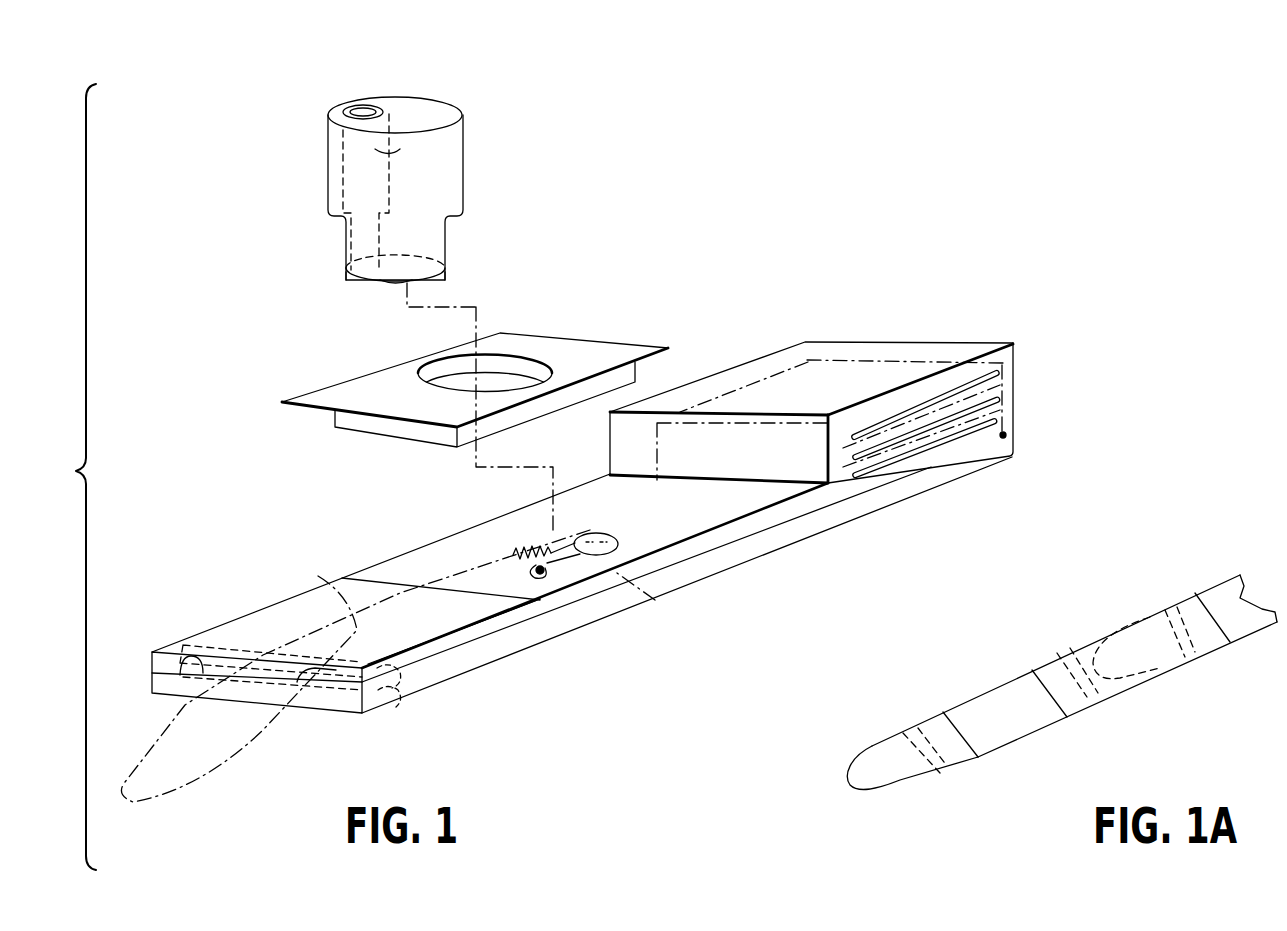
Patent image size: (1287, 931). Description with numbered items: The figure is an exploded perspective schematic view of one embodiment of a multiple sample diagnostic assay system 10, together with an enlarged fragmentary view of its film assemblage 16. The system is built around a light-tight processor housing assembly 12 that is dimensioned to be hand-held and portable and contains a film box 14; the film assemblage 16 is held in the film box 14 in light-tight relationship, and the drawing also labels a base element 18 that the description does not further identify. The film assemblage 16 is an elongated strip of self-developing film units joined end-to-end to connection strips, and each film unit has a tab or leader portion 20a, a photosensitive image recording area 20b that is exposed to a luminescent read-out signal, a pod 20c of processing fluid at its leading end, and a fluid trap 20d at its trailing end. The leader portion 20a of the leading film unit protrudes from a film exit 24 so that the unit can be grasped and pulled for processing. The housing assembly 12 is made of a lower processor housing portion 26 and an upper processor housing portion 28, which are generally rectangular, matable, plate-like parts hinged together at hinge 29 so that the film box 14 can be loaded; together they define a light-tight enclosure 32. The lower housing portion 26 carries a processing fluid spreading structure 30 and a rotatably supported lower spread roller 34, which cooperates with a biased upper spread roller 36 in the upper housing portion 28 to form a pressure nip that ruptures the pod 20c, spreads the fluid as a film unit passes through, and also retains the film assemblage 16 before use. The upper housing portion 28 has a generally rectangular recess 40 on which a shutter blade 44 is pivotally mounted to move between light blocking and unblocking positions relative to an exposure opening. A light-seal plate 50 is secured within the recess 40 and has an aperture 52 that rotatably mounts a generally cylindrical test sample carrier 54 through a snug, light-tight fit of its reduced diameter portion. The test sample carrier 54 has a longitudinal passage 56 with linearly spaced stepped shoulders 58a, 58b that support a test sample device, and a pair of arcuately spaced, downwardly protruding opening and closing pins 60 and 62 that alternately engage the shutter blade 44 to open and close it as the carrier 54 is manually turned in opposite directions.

In FIG. 1, the multiple sample diagnostic assay system 10 is at (893, 188).
In FIG. 1, the processor housing assembly 12 is at (899, 330).
In FIG. 1, the film box 14 is at (800, 388).
In FIG. 1, the film assemblage 16 is at (968, 405).
In FIG. 1A, the film assemblage 16 is at (985, 646).
In FIG. 1, the base 18 is at (307, 568).
In FIG. 1A, the tab or leader portion 20a is at (873, 760).
In FIG. 1A, the image recording area 20b is at (1027, 718).
In FIG. 1A, the pod 20c is at (942, 763).
In FIG. 1A, the fluid trap 20d is at (1060, 640).
In FIG. 1, the film exit 24 is at (333, 680).
In FIG. 1, the lower processor housing portion 26 is at (480, 658).
In FIG. 1, the upper processor housing portion 28 is at (538, 598).
In FIG. 1, the hinge 29 is at (1006, 436).
In FIG. 1, the processing fluid spreading structure 30 is at (231, 650).
In FIG. 1, the light-tight enclosure 32 is at (657, 602).
In FIG. 1, the lower spread roller 34 is at (400, 717).
In FIG. 1, the upper spread roller 36 is at (420, 697).
In FIG. 1, the recess 40 is at (483, 578).
In FIG. 1, the shutter blade 44 is at (576, 562).
In FIG. 1, the light-seal plate 50 is at (600, 340).
In FIG. 1, the aperture 52 is at (512, 362).
In FIG. 1, the test sample carrier 54 is at (464, 140).
In FIG. 1, the passage 56 is at (359, 105).
In FIG. 1, the stepped shoulder 58a is at (383, 110).
In FIG. 1, the stepped shoulder 58b is at (402, 152).
In FIG. 1, the opening pin 60 is at (370, 283).
In FIG. 1, the closing pin 62 is at (430, 283).